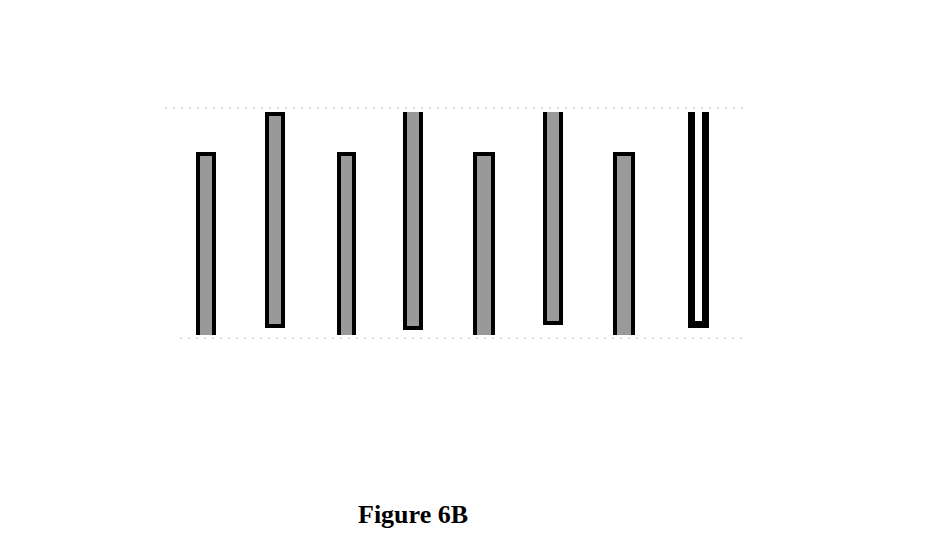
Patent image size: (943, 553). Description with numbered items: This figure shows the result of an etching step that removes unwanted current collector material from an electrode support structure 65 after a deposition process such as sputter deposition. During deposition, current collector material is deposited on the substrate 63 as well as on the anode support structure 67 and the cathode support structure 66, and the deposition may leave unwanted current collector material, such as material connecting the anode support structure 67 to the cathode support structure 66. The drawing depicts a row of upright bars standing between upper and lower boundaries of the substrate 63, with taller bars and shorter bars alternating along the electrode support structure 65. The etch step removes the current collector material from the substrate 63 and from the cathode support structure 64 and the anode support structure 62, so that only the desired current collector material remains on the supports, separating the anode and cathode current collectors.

The anode support structure 62 is at (273, 107).
The substrate 63 is at (733, 107).
The cathode support structure 64 is at (215, 345).
The electrode support structure 65 is at (435, 383).
The cathode support structure 66 is at (197, 247).
The anode support structure 67 is at (709, 215).